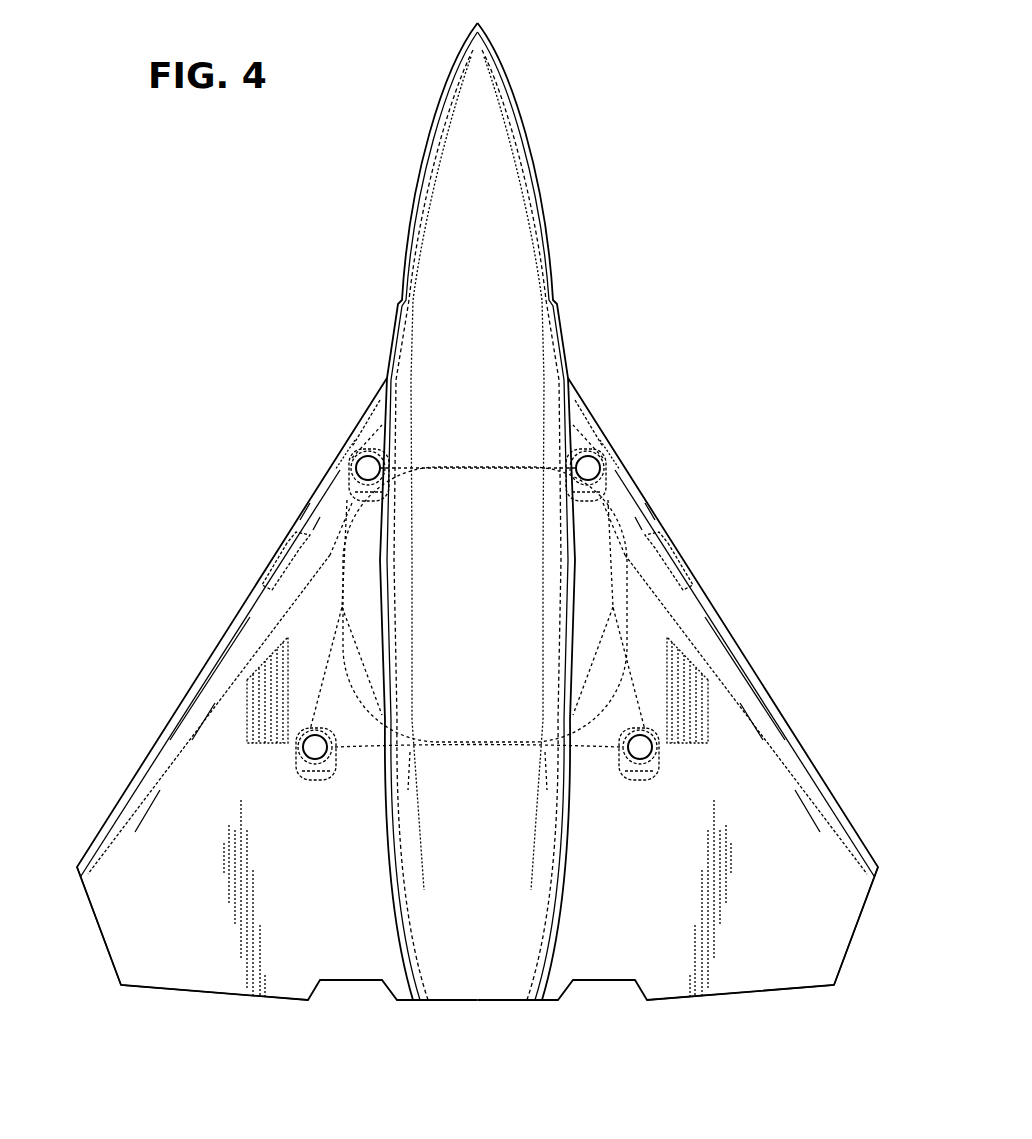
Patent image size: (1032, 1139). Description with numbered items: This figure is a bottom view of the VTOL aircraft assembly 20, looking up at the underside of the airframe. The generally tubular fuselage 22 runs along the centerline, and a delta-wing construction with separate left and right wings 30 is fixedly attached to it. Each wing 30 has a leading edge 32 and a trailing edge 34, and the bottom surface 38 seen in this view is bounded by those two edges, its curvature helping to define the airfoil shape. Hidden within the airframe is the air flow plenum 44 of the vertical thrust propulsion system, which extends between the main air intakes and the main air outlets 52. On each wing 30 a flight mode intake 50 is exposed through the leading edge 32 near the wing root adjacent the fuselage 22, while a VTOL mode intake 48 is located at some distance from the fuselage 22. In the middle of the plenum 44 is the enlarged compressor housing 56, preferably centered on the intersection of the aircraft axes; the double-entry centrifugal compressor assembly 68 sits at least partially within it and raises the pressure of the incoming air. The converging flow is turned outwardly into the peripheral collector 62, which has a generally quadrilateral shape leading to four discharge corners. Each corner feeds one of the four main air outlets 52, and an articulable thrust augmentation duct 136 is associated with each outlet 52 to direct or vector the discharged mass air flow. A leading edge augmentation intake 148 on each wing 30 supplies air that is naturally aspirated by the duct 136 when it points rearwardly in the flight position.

The aircraft assembly 20 is at (708, 185).
The fuselage 22 is at (447, 176).
The wing 30 is at (125, 931).
The leading edge 32 is at (200, 700).
The trailing edge 34 is at (192, 1002).
The bottom surface 38 is at (201, 821).
The air flow plenum 44 is at (450, 463).
The VTOL mode intake 48 is at (262, 668).
The flight mode intake 50 is at (345, 458).
The main air outlet 52 is at (350, 470).
The compressor housing 56 is at (490, 466).
The peripheral collector 62 is at (410, 752).
The centrifugal compressor assembly 68 is at (585, 702).
The thrust augmentation duct 136 is at (350, 461).
The leading edge augmentation intake 148 is at (270, 558).